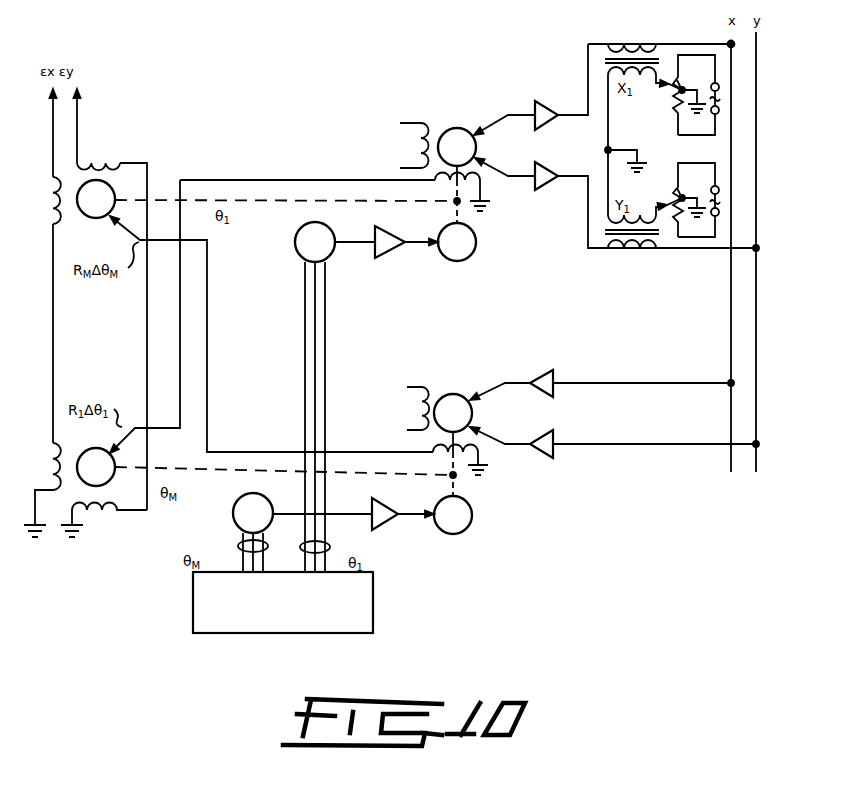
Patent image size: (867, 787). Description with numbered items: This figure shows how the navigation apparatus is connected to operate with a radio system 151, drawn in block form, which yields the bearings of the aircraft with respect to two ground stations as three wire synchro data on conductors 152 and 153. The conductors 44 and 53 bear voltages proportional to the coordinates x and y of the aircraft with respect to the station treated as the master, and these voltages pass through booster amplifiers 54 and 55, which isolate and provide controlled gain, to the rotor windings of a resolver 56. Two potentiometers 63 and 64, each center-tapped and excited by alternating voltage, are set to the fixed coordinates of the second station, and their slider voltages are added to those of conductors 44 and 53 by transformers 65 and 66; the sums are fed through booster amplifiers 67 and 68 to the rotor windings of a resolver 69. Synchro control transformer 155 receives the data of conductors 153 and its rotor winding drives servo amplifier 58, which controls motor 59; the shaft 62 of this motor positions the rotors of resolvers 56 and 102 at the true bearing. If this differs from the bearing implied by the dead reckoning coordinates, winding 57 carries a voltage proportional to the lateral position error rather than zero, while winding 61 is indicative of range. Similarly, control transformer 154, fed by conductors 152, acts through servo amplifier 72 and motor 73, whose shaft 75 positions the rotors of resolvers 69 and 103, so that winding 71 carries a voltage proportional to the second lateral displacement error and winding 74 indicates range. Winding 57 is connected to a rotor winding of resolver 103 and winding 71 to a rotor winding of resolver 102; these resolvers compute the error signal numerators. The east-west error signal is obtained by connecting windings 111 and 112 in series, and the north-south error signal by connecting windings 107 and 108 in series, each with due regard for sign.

The conductor 44 is at (729, 42).
The conductor 53 is at (757, 44).
The booster amplifier 54 is at (544, 375).
The booster amplifier 55 is at (552, 433).
The resolver 56 is at (460, 391).
The winding 57 is at (481, 457).
The servo amplifier 58 is at (384, 531).
The motor 59 is at (472, 515).
The winding 61 is at (420, 411).
The shaft 62 is at (233, 473).
The potentiometer 63 is at (675, 104).
The potentiometer 64 is at (675, 188).
The transformer 65 is at (633, 44).
The transformer 66 is at (641, 250).
The booster amplifier 67 is at (556, 101).
The booster amplifier 68 is at (550, 191).
The resolver 69 is at (468, 130).
The stator winding 71 is at (444, 184).
The servo amplifier 72 is at (392, 258).
The motor 73 is at (477, 250).
The winding 74 is at (419, 149).
The shaft 75 is at (232, 217).
The resolver 102 is at (108, 448).
The resolver 103 is at (84, 218).
The winding 107 is at (92, 511).
The winding 108 is at (101, 160).
The winding 111 is at (56, 205).
The winding 112 is at (56, 470).
The radio system 151 is at (374, 603).
The conductors 152 is at (330, 547).
The conductors 153 is at (238, 546).
The synchro control transformer 154 is at (329, 257).
The synchro control transformer 155 is at (234, 511).